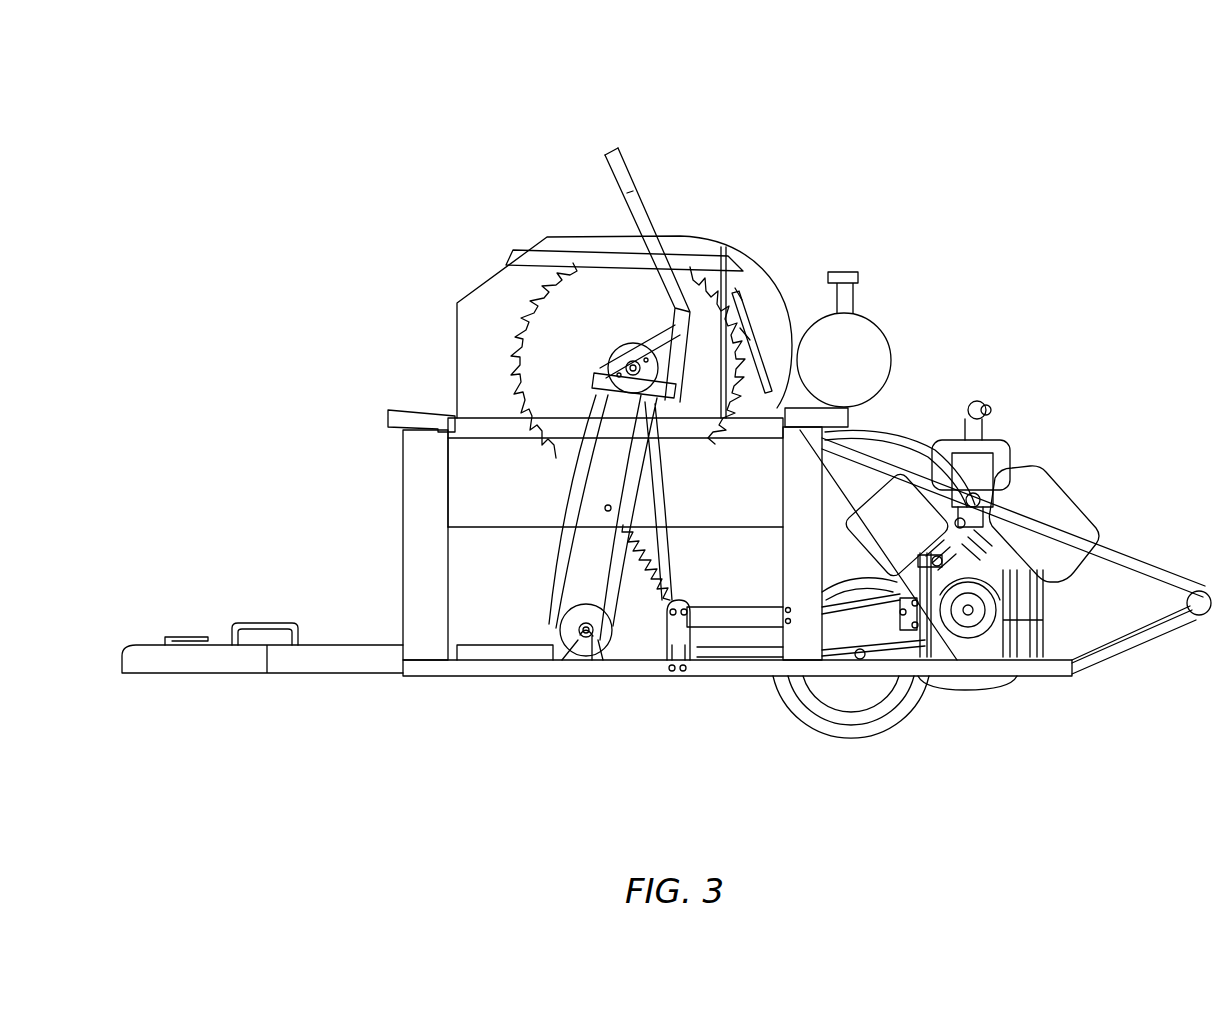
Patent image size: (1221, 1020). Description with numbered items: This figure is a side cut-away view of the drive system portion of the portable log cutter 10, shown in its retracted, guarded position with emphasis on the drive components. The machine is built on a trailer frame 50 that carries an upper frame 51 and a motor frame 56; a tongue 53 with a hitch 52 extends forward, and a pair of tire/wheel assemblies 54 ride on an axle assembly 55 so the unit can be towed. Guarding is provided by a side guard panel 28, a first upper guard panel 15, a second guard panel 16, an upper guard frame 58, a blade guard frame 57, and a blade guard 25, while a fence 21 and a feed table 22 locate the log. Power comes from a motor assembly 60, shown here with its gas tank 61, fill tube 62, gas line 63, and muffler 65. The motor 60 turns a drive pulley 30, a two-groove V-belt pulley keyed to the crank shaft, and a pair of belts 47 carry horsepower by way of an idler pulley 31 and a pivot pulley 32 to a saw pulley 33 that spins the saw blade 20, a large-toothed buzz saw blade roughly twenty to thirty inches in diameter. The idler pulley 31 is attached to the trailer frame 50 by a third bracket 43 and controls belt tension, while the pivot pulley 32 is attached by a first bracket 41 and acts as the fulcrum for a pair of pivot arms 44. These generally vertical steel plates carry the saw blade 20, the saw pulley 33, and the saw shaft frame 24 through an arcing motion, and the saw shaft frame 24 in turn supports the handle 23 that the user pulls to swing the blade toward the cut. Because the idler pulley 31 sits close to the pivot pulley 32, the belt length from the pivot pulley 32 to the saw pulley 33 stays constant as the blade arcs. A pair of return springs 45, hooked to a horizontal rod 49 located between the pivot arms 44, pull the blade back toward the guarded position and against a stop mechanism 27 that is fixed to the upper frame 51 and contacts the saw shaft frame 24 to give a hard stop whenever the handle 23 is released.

The portable log cutter 10 is at (168, 190).
The first upper guard panel 15 is at (612, 318).
The second guard panel 16 is at (745, 335).
The saw blade 20 is at (598, 370).
The fence 21 is at (455, 385).
The feed table 22 is at (430, 420).
The handle 23 is at (620, 160).
The saw shaft frame 24 is at (690, 355).
The blade guard 25 is at (738, 293).
The stop mechanism 27 is at (748, 318).
The side guard panel 28 is at (480, 472).
The drive pulley 30 is at (992, 633).
The idler pulley 31 is at (690, 605).
The pivot pulley 32 is at (570, 640).
The saw pulley 33 is at (640, 355).
The first bracket 41 is at (584, 642).
The third bracket 43 is at (687, 645).
The pivot arms 44 is at (613, 550).
The return springs 45 is at (668, 580).
The belts 47 is at (560, 608).
The horizontal rod 49 is at (604, 507).
The trailer frame 50 is at (638, 672).
The upper frame 51 is at (420, 475).
The hitch 52 is at (178, 650).
The tongue 53 is at (300, 664).
The tire/wheel assemblies 54 is at (900, 716).
The axle assembly 55 is at (858, 660).
The motor frame 56 is at (1185, 608).
The blade guard frame 57 is at (719, 268).
The upper guard frame 58 is at (612, 322).
The motor assembly 60 is at (1048, 492).
The gas tank 61 is at (872, 345).
The fill tube 62 is at (845, 275).
The gas line 63 is at (805, 490).
The muffler 65 is at (985, 402).